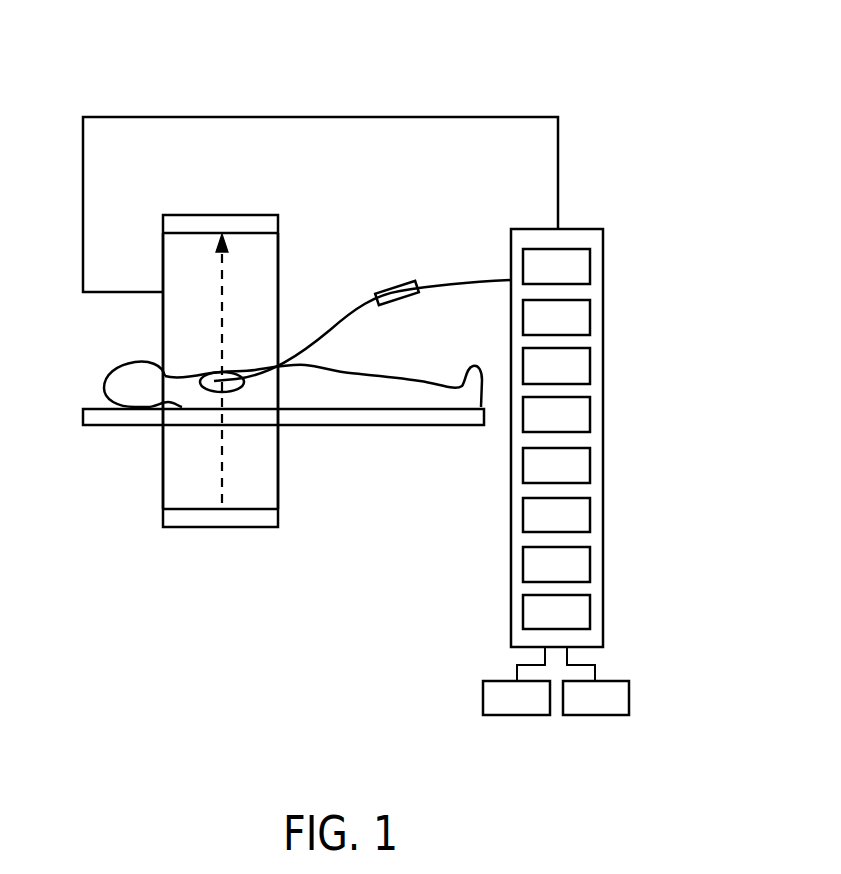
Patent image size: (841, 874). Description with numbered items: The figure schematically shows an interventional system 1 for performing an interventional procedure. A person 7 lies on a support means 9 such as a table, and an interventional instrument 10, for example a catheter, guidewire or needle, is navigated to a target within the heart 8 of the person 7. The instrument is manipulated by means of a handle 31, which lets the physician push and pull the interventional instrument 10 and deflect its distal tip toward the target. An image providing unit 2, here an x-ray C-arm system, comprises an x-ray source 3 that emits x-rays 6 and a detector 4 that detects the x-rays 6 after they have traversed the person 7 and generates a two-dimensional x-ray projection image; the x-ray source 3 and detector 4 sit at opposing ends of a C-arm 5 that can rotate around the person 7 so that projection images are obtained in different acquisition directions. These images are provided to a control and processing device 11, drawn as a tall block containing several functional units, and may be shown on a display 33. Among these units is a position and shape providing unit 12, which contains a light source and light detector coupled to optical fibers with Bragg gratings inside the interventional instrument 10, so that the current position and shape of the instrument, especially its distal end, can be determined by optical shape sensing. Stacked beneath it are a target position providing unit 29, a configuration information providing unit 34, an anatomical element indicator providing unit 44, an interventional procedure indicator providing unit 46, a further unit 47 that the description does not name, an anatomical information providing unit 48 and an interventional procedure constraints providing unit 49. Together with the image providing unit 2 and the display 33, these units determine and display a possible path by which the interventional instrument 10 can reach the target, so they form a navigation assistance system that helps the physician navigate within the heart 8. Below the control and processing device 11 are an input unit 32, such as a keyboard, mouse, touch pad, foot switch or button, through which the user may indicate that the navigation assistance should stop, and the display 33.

The interventional system 1 is at (457, 92).
The image providing unit 2 is at (160, 557).
The x-ray source 3 is at (222, 527).
The detector 4 is at (232, 215).
The C-arm 5 is at (278, 497).
The x-rays 6 is at (222, 453).
The person 7 is at (398, 376).
The heart 8 is at (232, 375).
The support means 9 is at (425, 426).
The interventional instrument 10 is at (452, 280).
The control and processing device 11 is at (603, 232).
The position and shape providing unit 12 is at (590, 268).
The target position providing unit 29 is at (590, 317).
The handle 31 is at (394, 286).
The input unit 32 is at (516, 715).
The display 33 is at (596, 715).
The configuration information providing unit 34 is at (590, 372).
The anatomical element indicator providing unit 44 is at (590, 422).
The interventional procedure indicator providing unit 46 is at (590, 468).
The k-space data 47 is at (590, 515).
The anatomical information providing unit 48 is at (590, 570).
The interventional procedure constraints providing unit 49 is at (590, 620).